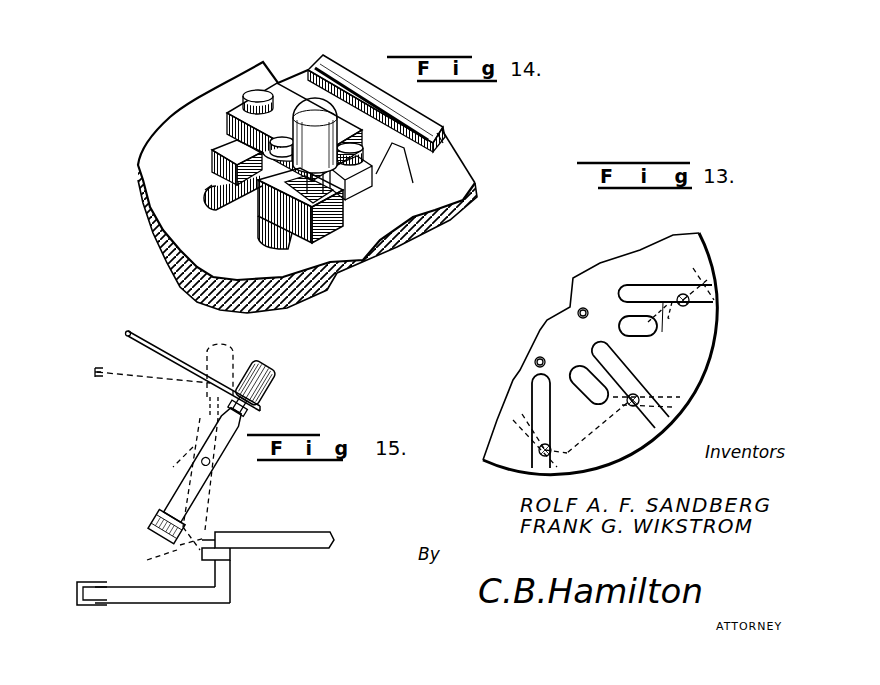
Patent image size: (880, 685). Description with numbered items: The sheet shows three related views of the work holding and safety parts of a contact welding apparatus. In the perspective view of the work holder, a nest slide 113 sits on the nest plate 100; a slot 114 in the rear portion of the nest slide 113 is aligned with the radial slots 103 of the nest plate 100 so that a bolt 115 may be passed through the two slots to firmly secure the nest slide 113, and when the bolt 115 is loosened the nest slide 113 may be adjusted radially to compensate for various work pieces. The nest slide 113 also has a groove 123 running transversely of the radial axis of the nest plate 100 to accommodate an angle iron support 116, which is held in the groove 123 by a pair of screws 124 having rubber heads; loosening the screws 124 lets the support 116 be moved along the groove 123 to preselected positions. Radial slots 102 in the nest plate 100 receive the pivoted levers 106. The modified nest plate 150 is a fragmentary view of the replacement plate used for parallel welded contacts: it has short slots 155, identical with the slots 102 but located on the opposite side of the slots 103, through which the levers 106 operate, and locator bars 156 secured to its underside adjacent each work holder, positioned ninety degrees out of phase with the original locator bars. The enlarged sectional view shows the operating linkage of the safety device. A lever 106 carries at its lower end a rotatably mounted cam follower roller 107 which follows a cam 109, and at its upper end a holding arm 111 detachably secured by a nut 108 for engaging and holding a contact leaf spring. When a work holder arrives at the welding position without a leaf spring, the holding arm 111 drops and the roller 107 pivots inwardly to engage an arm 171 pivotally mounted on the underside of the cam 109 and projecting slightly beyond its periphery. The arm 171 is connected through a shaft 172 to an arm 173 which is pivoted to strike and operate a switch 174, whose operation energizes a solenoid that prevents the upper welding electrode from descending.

In FIG. 14, the nest plate 100 is at (365, 267).
In FIG. 14, the radial slots 102 is at (258, 235).
In FIG. 14, the radial slots 103 is at (212, 185).
In FIG. 13, the radial slots 103 is at (535, 390).
In FIG. 14, the lever 106 is at (330, 231).
In FIG. 15, the lever 106 is at (186, 477).
In FIG. 15, the cam follower roller 107 is at (147, 530).
In FIG. 14, the nut 108 is at (312, 118).
In FIG. 15, the nut 108 is at (263, 352).
In FIG. 15, the cam 109 is at (293, 542).
In FIG. 15, the holding arm 111 is at (153, 348).
In FIG. 14, the nest slide 113 is at (337, 77).
In FIG. 14, the slot 114 is at (214, 195).
In FIG. 14, the bolt 115 is at (230, 135).
In FIG. 14, the angle iron support 116 is at (404, 148).
In FIG. 14, the groove 123 is at (438, 139).
In FIG. 14, the screws 124 is at (250, 97).
In FIG. 13, the nest plate 150 is at (697, 353).
In FIG. 13, the short slots 155 is at (618, 328).
In FIG. 13, the locator bar 156 is at (707, 283).
In FIG. 15, the arm 171 is at (222, 540).
In FIG. 15, the shaft 172 is at (231, 578).
In FIG. 15, the arm 173 is at (150, 594).
In FIG. 15, the switch 174 is at (80, 583).